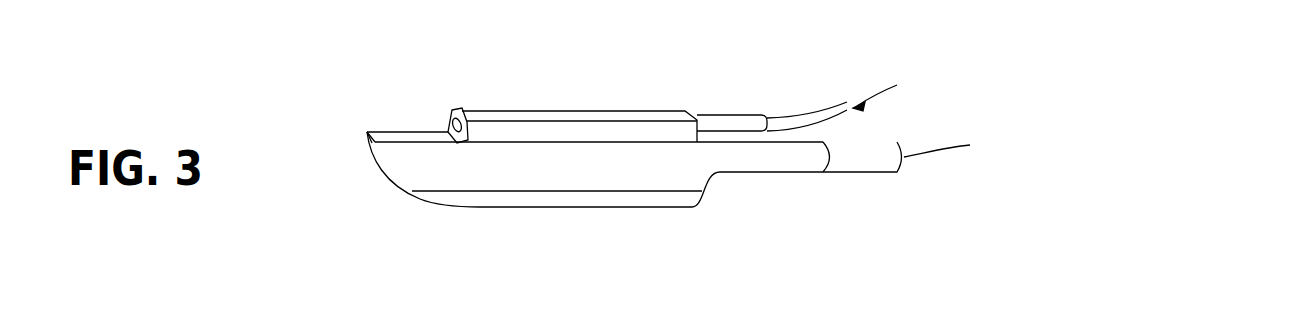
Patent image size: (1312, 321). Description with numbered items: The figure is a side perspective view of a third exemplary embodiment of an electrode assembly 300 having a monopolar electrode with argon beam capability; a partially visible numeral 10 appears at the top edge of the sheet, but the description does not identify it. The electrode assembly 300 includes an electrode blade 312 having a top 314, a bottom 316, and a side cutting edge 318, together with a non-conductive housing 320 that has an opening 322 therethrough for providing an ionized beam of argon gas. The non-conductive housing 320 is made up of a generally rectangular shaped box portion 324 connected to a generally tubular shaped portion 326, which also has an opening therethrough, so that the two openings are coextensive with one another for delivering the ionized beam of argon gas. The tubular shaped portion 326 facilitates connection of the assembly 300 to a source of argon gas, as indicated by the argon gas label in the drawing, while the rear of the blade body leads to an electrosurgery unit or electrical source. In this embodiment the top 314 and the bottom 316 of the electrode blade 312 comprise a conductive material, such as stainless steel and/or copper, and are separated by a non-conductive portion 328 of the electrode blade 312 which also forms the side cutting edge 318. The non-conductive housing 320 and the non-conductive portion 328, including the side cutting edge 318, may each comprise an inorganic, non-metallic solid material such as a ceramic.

The electrode assembly 300 is at (822, 68).
The surgical system 10 is at (513, 5).
The electrode blade 312 is at (698, 175).
The top 314 is at (381, 132).
The bottom 316 is at (483, 208).
The side cutting edge 318 is at (393, 182).
The non-conductive housing 320 is at (650, 110).
The opening 322 is at (463, 110).
The box portion 324 is at (560, 131).
The tubular shaped portion 326 is at (740, 111).
The non-conductive portion 328 is at (572, 180).